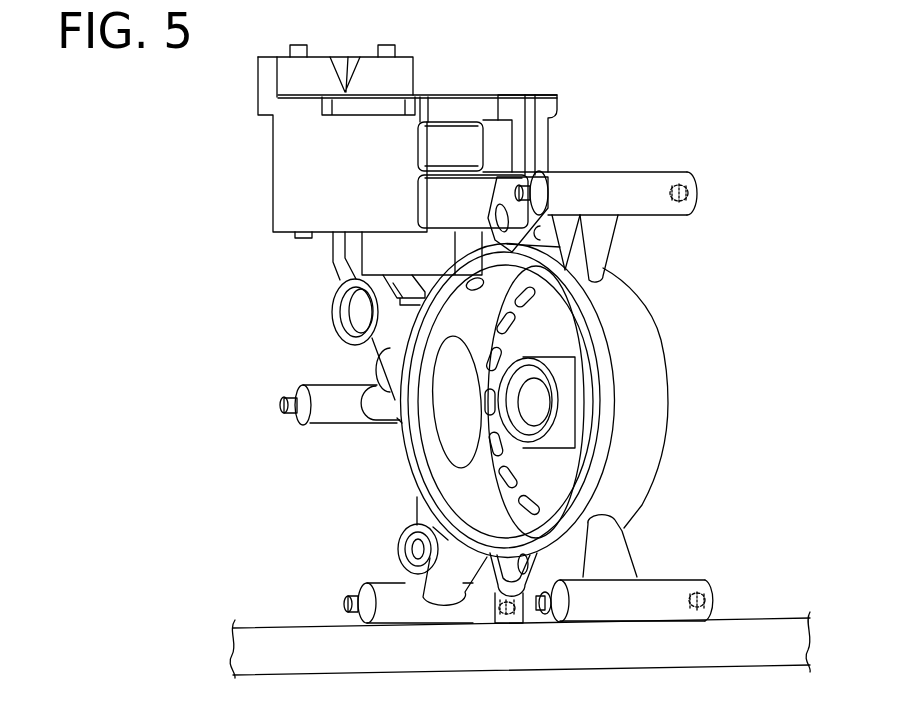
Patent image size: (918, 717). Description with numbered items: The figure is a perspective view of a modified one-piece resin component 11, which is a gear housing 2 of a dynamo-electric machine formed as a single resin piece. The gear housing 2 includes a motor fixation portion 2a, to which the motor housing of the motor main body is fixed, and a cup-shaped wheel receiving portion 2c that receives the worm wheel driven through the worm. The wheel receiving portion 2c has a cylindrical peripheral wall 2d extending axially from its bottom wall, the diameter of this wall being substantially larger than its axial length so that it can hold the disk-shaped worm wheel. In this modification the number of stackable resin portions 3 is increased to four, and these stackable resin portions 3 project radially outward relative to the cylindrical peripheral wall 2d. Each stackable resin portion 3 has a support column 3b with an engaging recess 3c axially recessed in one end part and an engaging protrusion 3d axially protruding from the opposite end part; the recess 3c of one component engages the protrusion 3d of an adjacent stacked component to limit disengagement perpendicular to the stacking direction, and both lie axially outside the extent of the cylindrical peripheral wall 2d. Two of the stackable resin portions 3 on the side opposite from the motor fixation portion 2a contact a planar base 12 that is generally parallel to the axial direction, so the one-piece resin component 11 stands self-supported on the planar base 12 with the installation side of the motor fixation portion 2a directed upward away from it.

The gear housing 2 is at (272, 148).
The motor fixation portion 2a is at (467, 95).
The wheel receiving portion 2c is at (443, 485).
The cylindrical peripheral wall 2d is at (660, 401).
The stackable resin portion 3 is at (580, 172).
The support column 3b is at (640, 172).
The engaging recess 3c is at (697, 184).
The engaging protrusion 3d is at (297, 425).
The one-piece resin component 11 is at (246, 200).
The planar base 12 is at (764, 618).